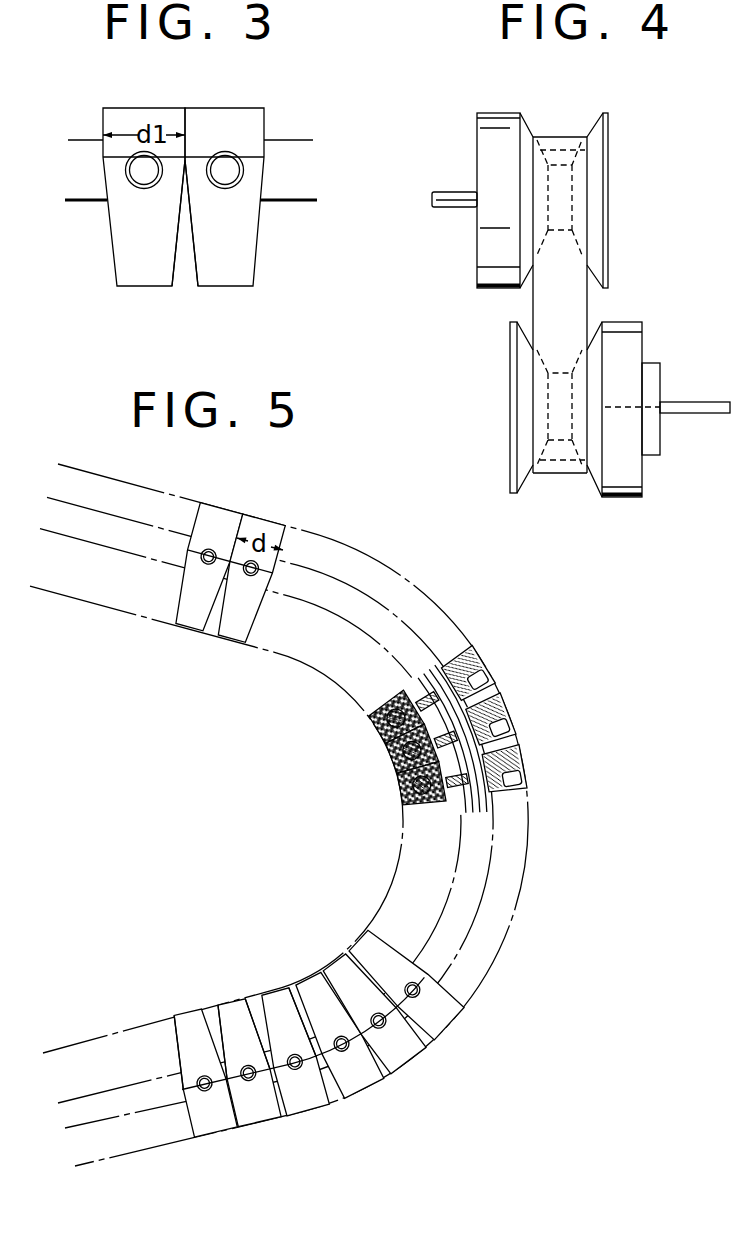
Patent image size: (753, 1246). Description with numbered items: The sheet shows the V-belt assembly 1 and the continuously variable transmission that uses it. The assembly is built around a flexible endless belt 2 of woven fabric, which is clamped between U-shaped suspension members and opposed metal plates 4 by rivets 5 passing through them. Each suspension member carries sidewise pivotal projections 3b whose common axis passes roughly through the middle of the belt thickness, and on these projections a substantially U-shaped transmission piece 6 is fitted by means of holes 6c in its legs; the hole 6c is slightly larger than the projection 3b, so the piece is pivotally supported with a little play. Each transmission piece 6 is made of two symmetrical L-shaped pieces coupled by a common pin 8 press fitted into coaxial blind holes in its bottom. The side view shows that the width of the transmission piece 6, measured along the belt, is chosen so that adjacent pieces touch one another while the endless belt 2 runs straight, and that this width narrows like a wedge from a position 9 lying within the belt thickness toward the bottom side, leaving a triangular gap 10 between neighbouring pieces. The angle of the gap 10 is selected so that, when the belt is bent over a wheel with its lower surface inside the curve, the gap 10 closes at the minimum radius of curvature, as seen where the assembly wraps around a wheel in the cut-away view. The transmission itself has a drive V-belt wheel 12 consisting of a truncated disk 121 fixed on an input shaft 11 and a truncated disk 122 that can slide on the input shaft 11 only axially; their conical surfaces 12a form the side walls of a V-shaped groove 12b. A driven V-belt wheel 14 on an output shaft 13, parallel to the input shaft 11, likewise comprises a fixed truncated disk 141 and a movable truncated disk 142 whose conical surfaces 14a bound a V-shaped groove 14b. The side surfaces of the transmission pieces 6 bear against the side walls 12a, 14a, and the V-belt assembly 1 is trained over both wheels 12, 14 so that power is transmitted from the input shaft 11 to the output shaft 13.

In FIG. 4, the V-belt assembly 1 is at (592, 318).
In FIG. 5, the V-belt assembly 1 is at (430, 586).
In FIG. 3, the flexible endless belt 2 is at (305, 203).
In FIG. 5, the flexible endless belt 2 is at (482, 797).
In FIG. 3, the pivotal projection 3b is at (232, 173).
In FIG. 5, the pivotal projection 3b is at (208, 566).
In FIG. 5, the metal plate 4 is at (410, 692).
In FIG. 5, the rivet 5 is at (487, 678).
In FIG. 3, the transmission piece 6 is at (153, 118).
In FIG. 5, the transmission piece 6 is at (232, 523).
In FIG. 3, the hole 6c is at (237, 158).
In FIG. 5, the hole 6c is at (250, 580).
In FIG. 5, the common pin 8 is at (385, 720).
In FIG. 3, the position above the lower bottom surface 9 is at (103, 157).
In FIG. 3, the triangular gap 10 is at (183, 253).
In FIG. 5, the triangular gap 10 is at (253, 996).
In FIG. 4, the input shaft 11 is at (450, 208).
In FIG. 4, the drive V-belt wheel 12 is at (544, 174).
In FIG. 4, the conical surfaces 12a is at (597, 117).
In FIG. 4, the V-shaped groove 12b is at (560, 180).
In FIG. 4, the truncated disk 121 is at (597, 148).
In FIG. 4, the truncated disk 122 is at (480, 152).
In FIG. 4, the output shaft 13 is at (705, 410).
In FIG. 4, the driven V-belt wheel 14 is at (568, 441).
In FIG. 4, the conical surfaces 14a is at (593, 483).
In FIG. 4, the V-shaped groove 14b is at (560, 428).
In FIG. 4, the fixed truncated disk 141 is at (510, 427).
In FIG. 4, the movable truncated disk 142 is at (635, 472).